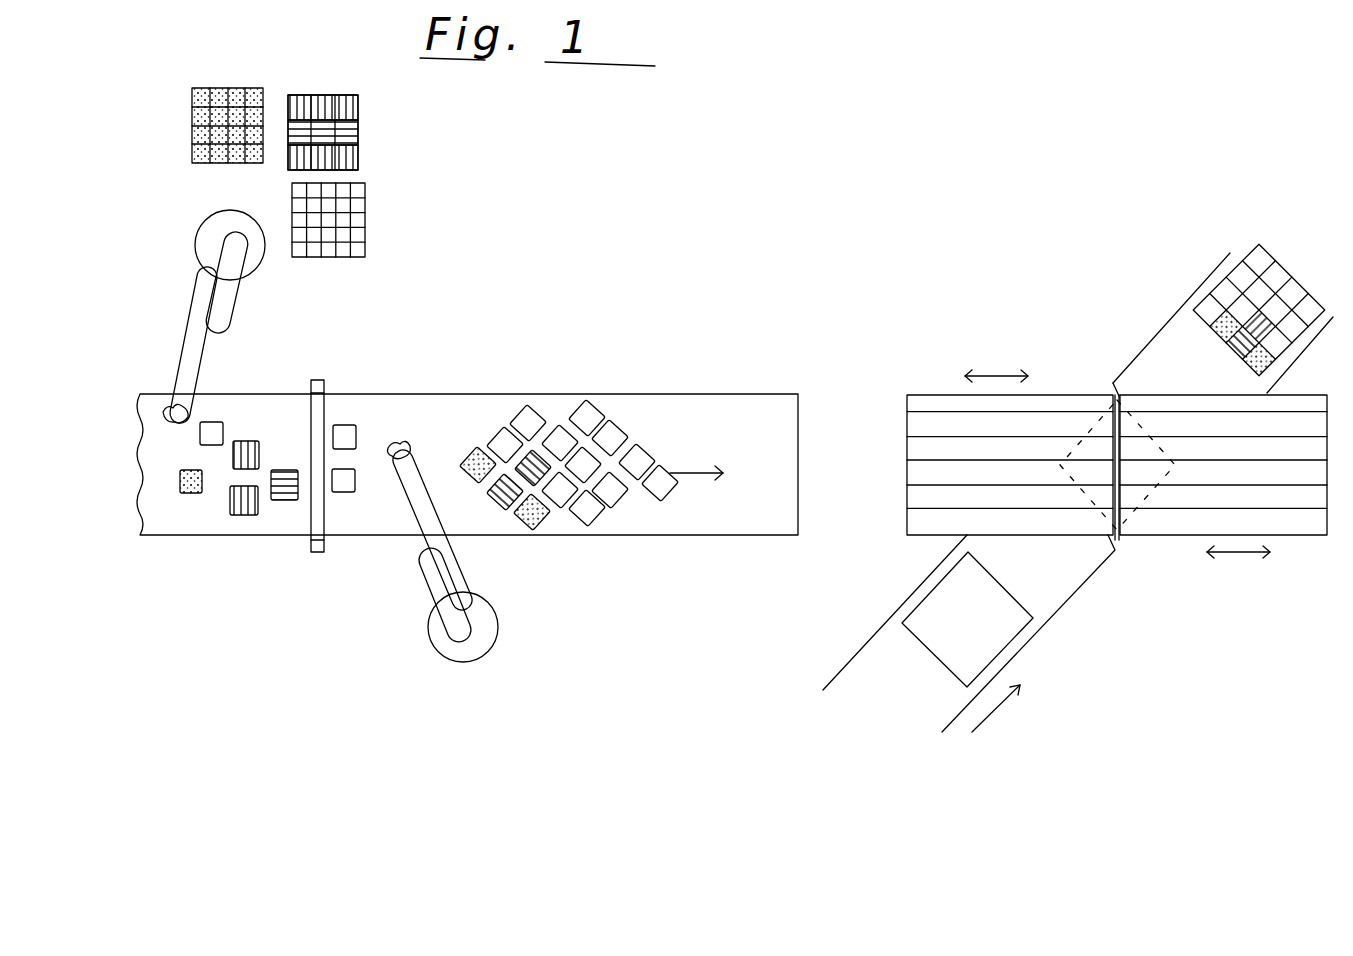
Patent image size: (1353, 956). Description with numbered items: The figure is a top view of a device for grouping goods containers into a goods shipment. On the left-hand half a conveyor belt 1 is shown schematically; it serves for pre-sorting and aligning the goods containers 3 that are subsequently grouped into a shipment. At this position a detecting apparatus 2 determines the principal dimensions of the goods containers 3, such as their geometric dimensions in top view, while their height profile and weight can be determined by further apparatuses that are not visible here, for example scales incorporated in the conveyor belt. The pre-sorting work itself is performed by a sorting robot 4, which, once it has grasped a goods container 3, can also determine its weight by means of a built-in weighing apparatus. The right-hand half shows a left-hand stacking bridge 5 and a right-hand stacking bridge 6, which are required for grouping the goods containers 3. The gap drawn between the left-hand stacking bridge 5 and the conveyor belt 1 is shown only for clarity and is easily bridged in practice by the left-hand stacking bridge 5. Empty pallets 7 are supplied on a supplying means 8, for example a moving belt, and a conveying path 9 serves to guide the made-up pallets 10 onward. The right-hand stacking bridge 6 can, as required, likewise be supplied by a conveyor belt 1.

The conveyor belt 1 is at (257, 540).
The detecting apparatus 2 is at (312, 553).
The goods containers 3 is at (222, 427).
The sorting robot 4 is at (497, 627).
The left-hand stacking bridge 5 is at (1053, 395).
The right-hand stacking bridge 6 is at (1300, 535).
The empty pallets 7 is at (948, 620).
The supplying means 8 is at (915, 695).
The conveying path 9 is at (1200, 355).
The made-up pallets 10 is at (1245, 285).